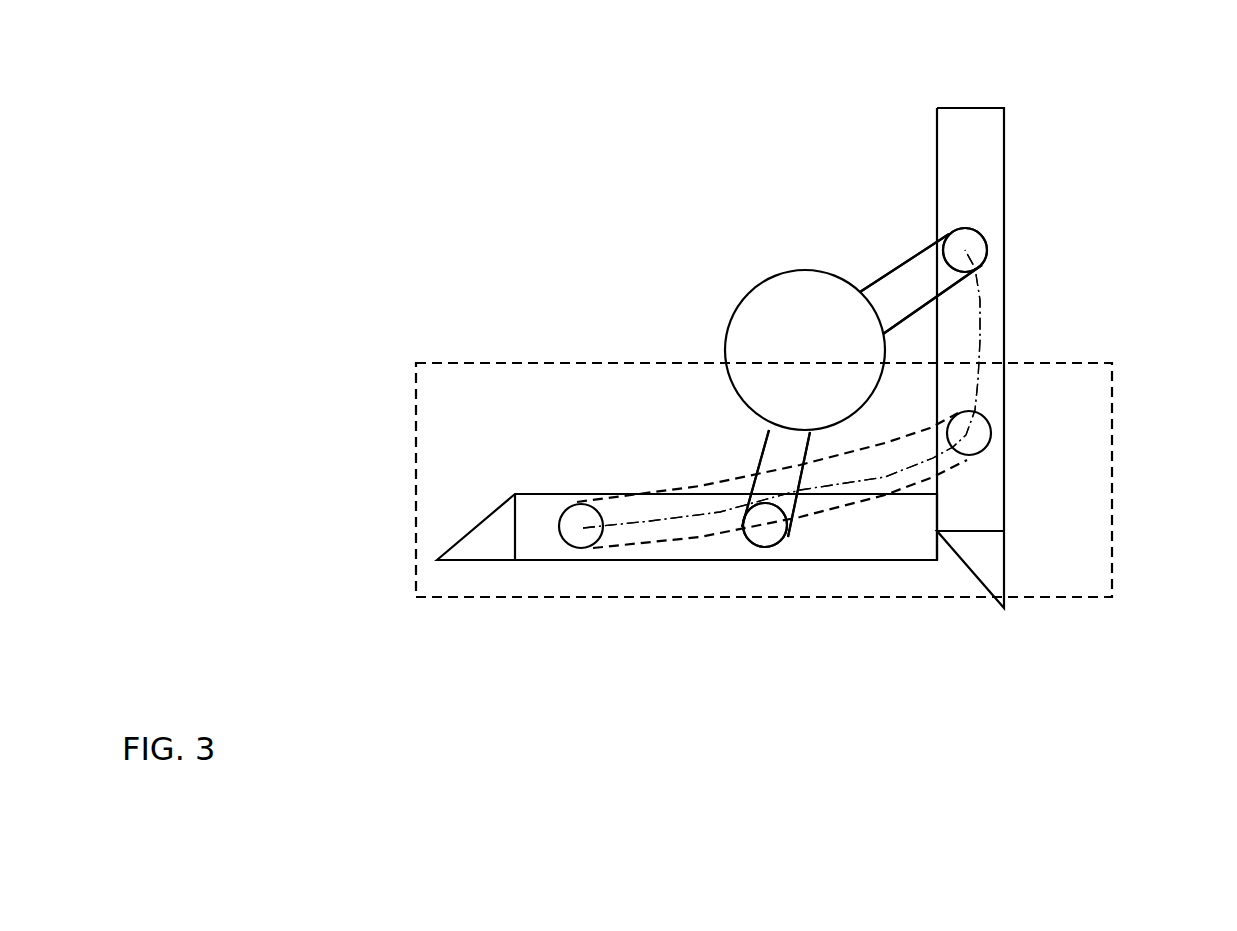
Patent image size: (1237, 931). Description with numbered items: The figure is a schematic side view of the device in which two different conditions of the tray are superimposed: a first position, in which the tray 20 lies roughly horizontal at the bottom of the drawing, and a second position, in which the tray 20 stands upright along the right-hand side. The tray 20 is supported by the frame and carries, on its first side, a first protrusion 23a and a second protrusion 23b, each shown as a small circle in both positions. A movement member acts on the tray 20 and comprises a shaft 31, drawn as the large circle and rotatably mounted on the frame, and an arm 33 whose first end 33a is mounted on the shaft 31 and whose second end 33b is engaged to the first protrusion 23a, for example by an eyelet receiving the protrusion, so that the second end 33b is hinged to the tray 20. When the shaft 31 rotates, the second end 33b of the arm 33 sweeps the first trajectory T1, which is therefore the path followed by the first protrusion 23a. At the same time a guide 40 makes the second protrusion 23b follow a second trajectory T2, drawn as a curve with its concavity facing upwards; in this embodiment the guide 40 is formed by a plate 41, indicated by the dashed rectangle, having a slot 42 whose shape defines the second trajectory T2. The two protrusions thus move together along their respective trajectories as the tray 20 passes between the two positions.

The tray 20 is at (1003, 201).
The first protrusion 23a is at (983, 256).
The second protrusion 23b is at (990, 433).
The shaft 31 is at (763, 310).
The arm 33 is at (904, 262).
The first end 33a is at (862, 293).
The second end 33b is at (947, 230).
The guide 40 is at (680, 479).
The plate 41 is at (1095, 561).
The slot 42 is at (640, 505).
The first trajectory T1 is at (987, 329).
The second trajectory T2 is at (668, 520).